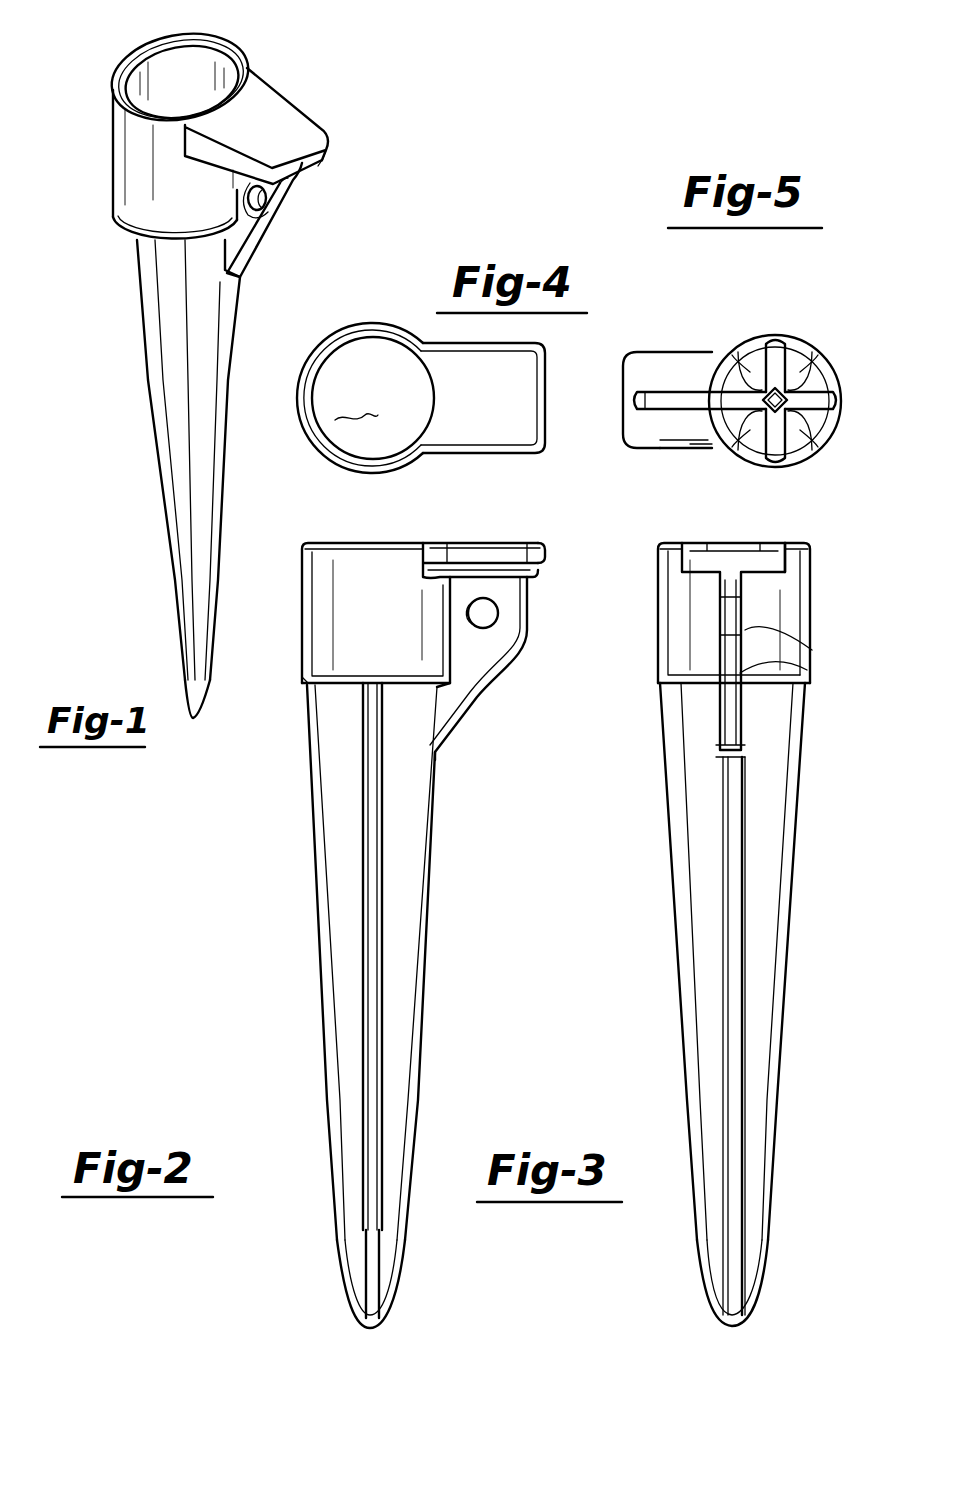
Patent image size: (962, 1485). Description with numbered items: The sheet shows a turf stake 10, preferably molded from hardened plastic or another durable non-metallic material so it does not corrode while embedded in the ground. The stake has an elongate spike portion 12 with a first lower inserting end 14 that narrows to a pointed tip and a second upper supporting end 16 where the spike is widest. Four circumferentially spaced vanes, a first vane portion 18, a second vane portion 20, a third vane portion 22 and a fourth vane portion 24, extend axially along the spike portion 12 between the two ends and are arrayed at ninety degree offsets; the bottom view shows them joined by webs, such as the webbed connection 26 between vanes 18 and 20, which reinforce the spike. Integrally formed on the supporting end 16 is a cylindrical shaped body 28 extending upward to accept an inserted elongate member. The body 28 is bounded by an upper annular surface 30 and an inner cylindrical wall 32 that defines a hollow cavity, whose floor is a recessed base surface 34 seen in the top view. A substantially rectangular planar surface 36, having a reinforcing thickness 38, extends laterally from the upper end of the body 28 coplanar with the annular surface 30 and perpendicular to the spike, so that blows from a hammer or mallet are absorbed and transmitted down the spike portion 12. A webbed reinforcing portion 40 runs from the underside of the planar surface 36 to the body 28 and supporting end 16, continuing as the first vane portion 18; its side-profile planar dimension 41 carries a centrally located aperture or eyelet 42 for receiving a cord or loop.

In FIG. 1, the turf stake 10 is at (120, 307).
In FIG. 4, the turf stake 10 is at (298, 406).
In FIG. 5, the turf stake 10 is at (724, 340).
In FIG. 2, the turf stake 10 is at (291, 626).
In FIG. 3, the turf stake 10 is at (797, 1028).
In FIG. 1, the spike portion 12 is at (151, 415).
In FIG. 5, the spike portion 12 is at (822, 448).
In FIG. 3, the spike portion 12 is at (789, 988).
In FIG. 1, the first lower inserting end 14 is at (190, 720).
In FIG. 5, the first lower inserting end 14 is at (775, 345).
In FIG. 2, the first lower inserting end 14 is at (360, 1320).
In FIG. 3, the first lower inserting end 14 is at (745, 1330).
In FIG. 1, the second upper supporting end 16 is at (138, 228).
In FIG. 5, the second upper supporting end 16 is at (815, 378).
In FIG. 2, the second upper supporting end 16 is at (312, 688).
In FIG. 3, the second upper supporting end 16 is at (662, 684).
In FIG. 1, the first vane portion 18 is at (222, 449).
In FIG. 5, the first vane portion 18 is at (692, 447).
In FIG. 2, the first vane portion 18 is at (428, 834).
In FIG. 3, the first vane portion 18 is at (722, 970).
In FIG. 1, the second vane portion 20 is at (160, 509).
In FIG. 5, the second vane portion 20 is at (788, 440).
In FIG. 2, the second vane portion 20 is at (364, 928).
In FIG. 3, the second vane portion 20 is at (676, 877).
In FIG. 5, the third vane portion 22 is at (820, 387).
In FIG. 2, the third vane portion 22 is at (314, 850).
In FIG. 5, the fourth vane portion 24 is at (777, 368).
In FIG. 3, the fourth vane portion 24 is at (788, 843).
In FIG. 5, the webbed connection 26 is at (766, 437).
In FIG. 1, the cylindrical shaped body 28 is at (133, 157).
In FIG. 4, the cylindrical shaped body 28 is at (320, 450).
In FIG. 5, the cylindrical shaped body 28 is at (808, 424).
In FIG. 2, the cylindrical shaped body 28 is at (314, 590).
In FIG. 3, the cylindrical shaped body 28 is at (658, 611).
In FIG. 1, the upper annular surface 30 is at (170, 43).
In FIG. 4, the upper annular surface 30 is at (337, 346).
In FIG. 2, the upper annular surface 30 is at (363, 543).
In FIG. 3, the upper annular surface 30 is at (672, 543).
In FIG. 1, the inner cylindrical wall 32 is at (225, 88).
In FIG. 4, the inner cylindrical wall 32 is at (378, 350).
In FIG. 4, the recessed base surface 34 is at (356, 401).
In FIG. 1, the planar surface 36 is at (287, 128).
In FIG. 4, the planar surface 36 is at (552, 420).
In FIG. 5, the planar surface 36 is at (625, 382).
In FIG. 2, the planar surface 36 is at (477, 543).
In FIG. 3, the planar surface 36 is at (747, 548).
In FIG. 1, the reinforcing thickness 38 is at (318, 160).
In FIG. 2, the reinforcing thickness 38 is at (545, 560).
In FIG. 3, the reinforcing thickness 38 is at (780, 545).
In FIG. 1, the webbed reinforcing portion 40 is at (252, 262).
In FIG. 5, the webbed reinforcing portion 40 is at (662, 392).
In FIG. 2, the webbed reinforcing portion 40 is at (466, 716).
In FIG. 3, the webbed reinforcing portion 40 is at (810, 680).
In FIG. 2, the planar dimension 41 is at (475, 655).
In FIG. 1, the aperture or eyelet 42 is at (268, 200).
In FIG. 5, the aperture or eyelet 42 is at (665, 435).
In FIG. 2, the aperture or eyelet 42 is at (488, 614).
In FIG. 3, the aperture or eyelet 42 is at (745, 630).